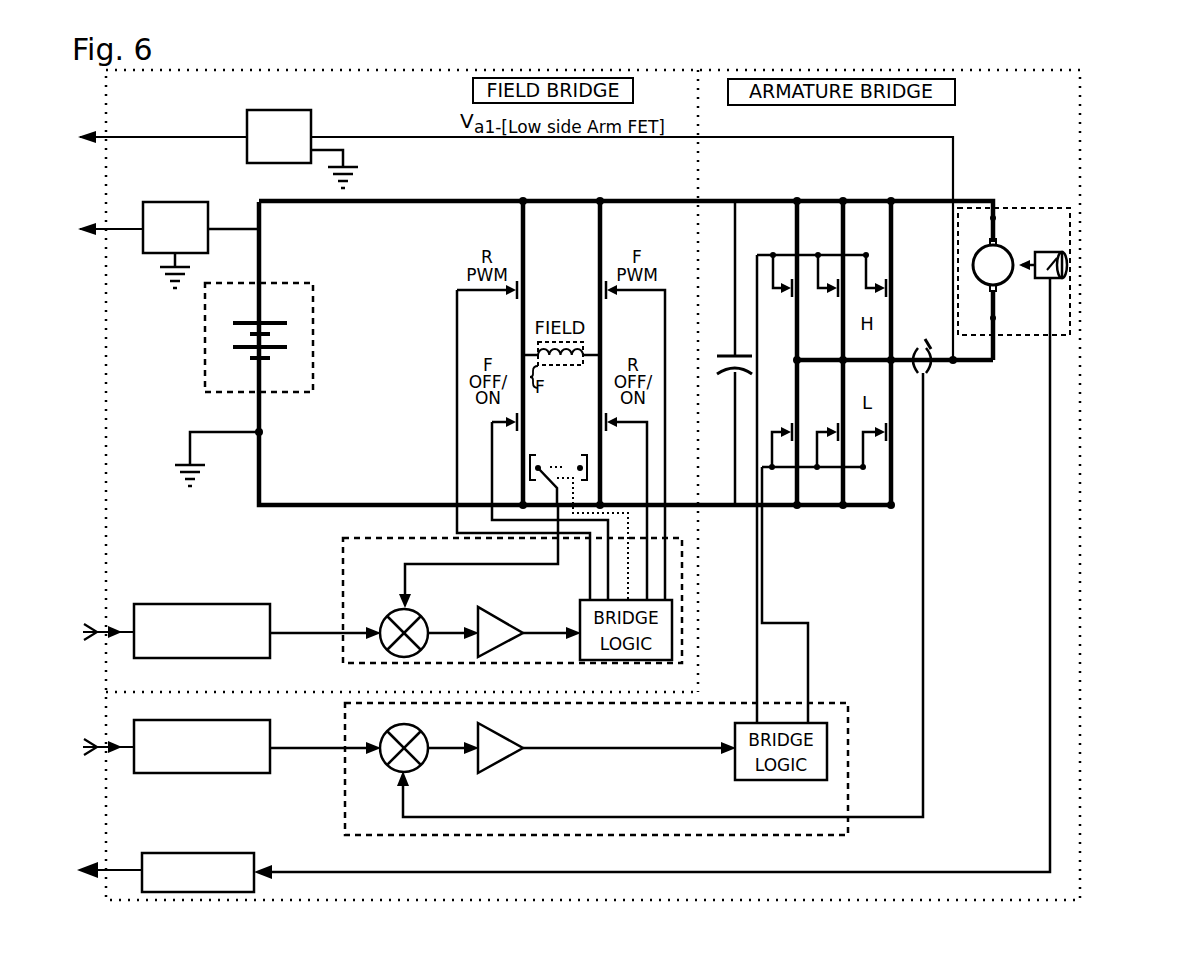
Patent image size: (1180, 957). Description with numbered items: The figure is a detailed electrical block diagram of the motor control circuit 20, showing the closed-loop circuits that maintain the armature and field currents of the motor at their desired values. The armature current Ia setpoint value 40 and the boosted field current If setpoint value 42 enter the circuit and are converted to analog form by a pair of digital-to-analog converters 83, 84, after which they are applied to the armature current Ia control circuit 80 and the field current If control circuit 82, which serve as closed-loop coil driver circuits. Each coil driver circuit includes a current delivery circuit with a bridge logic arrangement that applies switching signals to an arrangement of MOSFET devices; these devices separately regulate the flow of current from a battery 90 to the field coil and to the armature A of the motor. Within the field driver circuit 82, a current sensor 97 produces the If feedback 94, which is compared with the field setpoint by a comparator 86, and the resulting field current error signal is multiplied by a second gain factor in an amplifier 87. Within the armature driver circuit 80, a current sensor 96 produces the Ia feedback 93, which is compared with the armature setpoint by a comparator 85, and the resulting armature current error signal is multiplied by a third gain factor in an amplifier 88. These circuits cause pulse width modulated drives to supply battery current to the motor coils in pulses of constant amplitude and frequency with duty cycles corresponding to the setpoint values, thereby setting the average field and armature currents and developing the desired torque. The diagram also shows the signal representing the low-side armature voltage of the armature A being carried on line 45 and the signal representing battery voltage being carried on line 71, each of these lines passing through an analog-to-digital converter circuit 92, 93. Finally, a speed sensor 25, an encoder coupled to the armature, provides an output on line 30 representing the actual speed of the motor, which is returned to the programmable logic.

The motor control circuit 20 is at (402, 70).
The line 45 is at (153, 137).
The A-D converter circuit 92 is at (311, 116).
The A-D converter circuit 93 is at (195, 202).
The line 71 is at (128, 231).
The battery 90 is at (205, 368).
The current sensor 97 is at (566, 466).
The If feedback 94 is at (560, 552).
The field current If control circuit 82 is at (345, 565).
The comparator 86 is at (413, 608).
The amplifier 87 is at (506, 585).
The digital-to-analog converter 84 is at (270, 648).
The boosted field current If setpoint value 42 is at (100, 636).
The digital-to-analog converter 83 is at (263, 720).
The comparator 85 is at (413, 735).
The amplifier 88 is at (507, 762).
The armature current Ia control circuit 80 is at (345, 798).
The armature current Ia setpoint value 40 is at (93, 750).
The line 30 is at (100, 873).
The current sensor 96 is at (930, 368).
The armature A is at (1057, 223).
The speed sensor 25 is at (1060, 254).